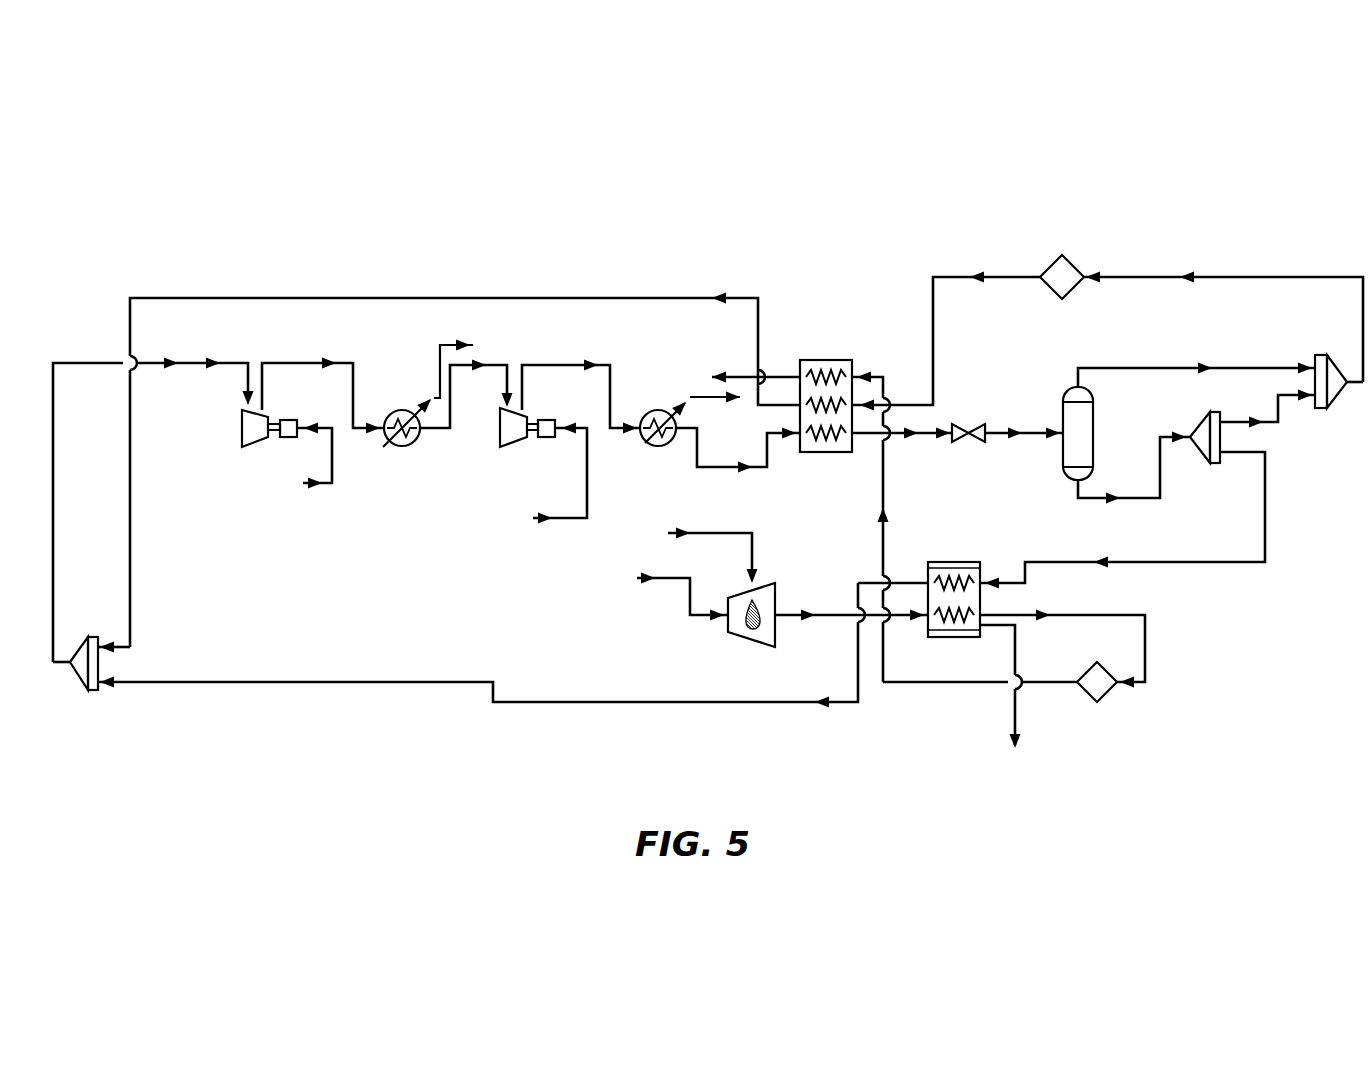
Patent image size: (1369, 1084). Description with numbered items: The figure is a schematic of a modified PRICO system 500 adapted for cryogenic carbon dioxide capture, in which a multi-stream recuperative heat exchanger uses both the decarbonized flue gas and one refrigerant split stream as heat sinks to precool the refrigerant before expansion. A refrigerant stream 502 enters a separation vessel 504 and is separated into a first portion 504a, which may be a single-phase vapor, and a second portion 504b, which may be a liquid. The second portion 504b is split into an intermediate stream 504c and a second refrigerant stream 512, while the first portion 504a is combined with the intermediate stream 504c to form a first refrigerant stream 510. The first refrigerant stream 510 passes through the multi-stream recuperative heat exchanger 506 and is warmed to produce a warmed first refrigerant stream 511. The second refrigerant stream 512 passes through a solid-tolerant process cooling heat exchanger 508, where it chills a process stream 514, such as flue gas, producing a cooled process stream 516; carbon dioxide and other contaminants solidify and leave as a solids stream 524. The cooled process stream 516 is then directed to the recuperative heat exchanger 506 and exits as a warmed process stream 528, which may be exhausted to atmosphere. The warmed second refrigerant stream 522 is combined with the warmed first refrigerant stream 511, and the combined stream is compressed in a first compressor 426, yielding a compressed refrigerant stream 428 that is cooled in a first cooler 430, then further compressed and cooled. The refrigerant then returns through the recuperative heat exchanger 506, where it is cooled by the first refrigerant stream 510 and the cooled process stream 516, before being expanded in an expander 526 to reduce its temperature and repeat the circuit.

The modified PRICO system 500 is at (448, 172).
The warmed first refrigerant stream 511 is at (378, 300).
The first compressor 426 is at (240, 425).
The compressed refrigerant stream 428 is at (300, 358).
The first cooler 430 is at (393, 411).
The warmed process stream 528 is at (744, 372).
The multi-stream recuperative heat exchanger 506 is at (822, 358).
The expander 526 is at (964, 426).
The refrigerant stream 502 is at (1030, 437).
The separation vessel 504 is at (1062, 398).
The first portion 504a is at (1176, 364).
The second portion 504b is at (1148, 500).
The intermediate stream 504c is at (1281, 416).
The cooled process stream 516 is at (885, 488).
The first refrigerant stream 510 is at (1128, 276).
The second refrigerant stream 512 is at (1170, 565).
The process cooling heat exchanger 508 is at (953, 561).
The process stream 514 is at (829, 608).
The solids stream 524 is at (1010, 711).
The warmed second refrigerant stream 522 is at (590, 705).